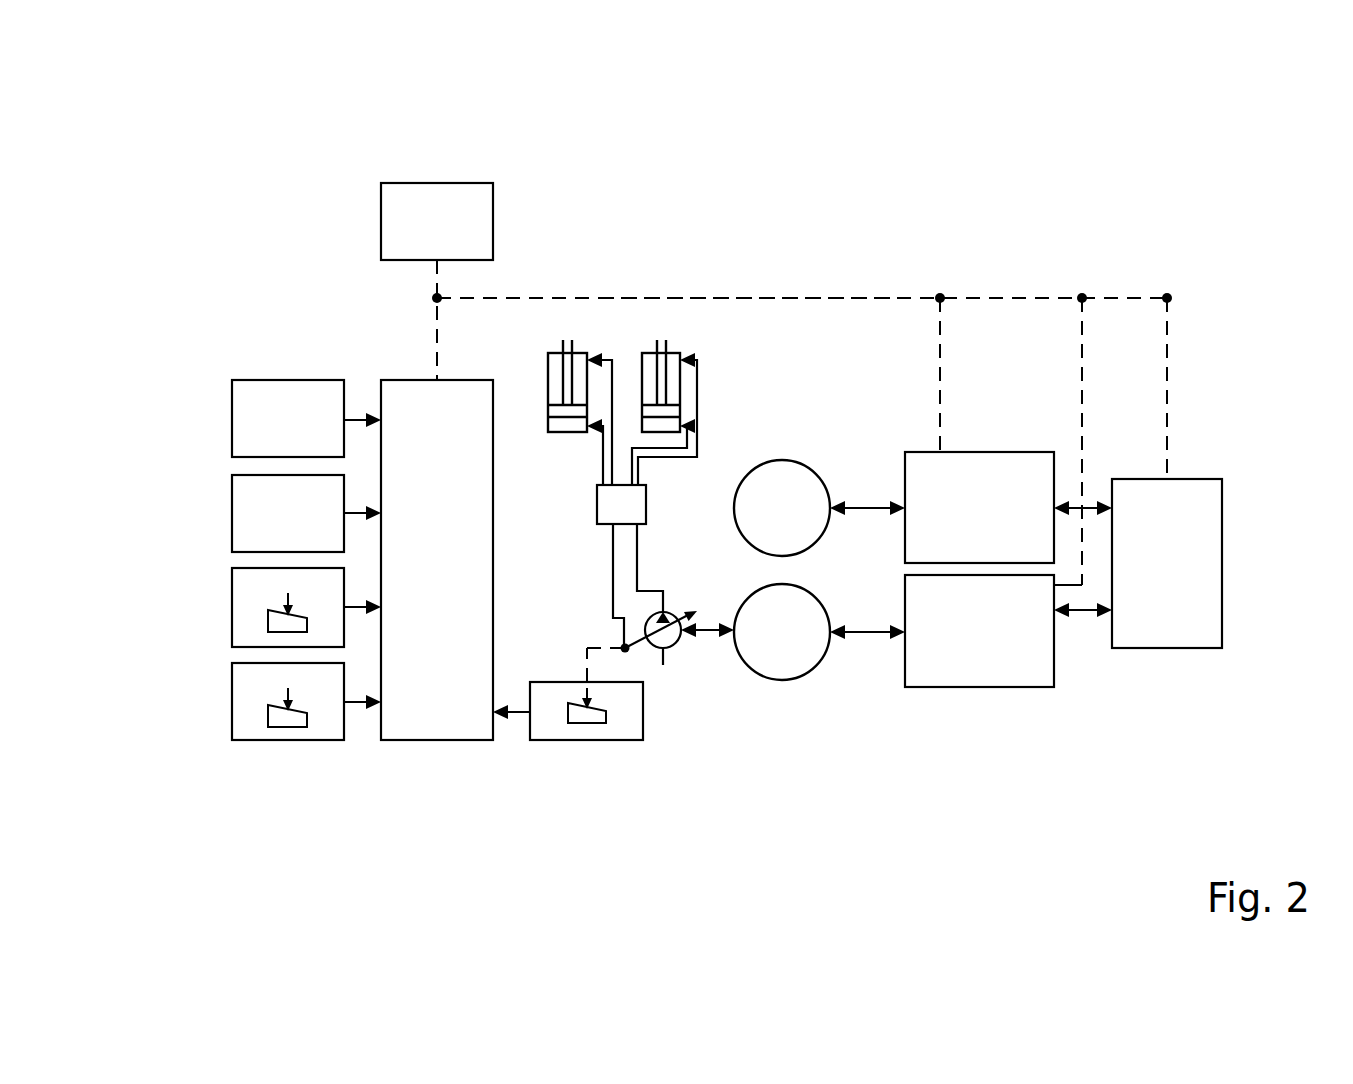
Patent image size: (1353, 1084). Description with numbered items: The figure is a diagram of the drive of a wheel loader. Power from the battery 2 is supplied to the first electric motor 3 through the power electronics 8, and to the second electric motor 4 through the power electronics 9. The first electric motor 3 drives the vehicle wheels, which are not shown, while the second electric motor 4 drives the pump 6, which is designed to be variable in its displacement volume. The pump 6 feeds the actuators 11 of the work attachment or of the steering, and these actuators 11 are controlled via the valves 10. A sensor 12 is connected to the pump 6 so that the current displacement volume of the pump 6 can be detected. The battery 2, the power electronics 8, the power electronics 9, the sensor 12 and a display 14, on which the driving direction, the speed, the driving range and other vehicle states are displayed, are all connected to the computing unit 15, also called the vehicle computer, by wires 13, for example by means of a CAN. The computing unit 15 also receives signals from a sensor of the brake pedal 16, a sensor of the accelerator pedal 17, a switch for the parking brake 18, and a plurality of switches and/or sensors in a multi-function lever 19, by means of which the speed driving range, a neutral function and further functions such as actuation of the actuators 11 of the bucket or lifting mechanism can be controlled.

The battery 2 is at (1167, 648).
The first electric motor 3 is at (784, 458).
The second electric motor 4 is at (782, 680).
The pump 6 is at (670, 637).
The power electronics 8 is at (980, 452).
The power electronics 9 is at (980, 687).
The valves 10 is at (623, 503).
The actuators 11 is at (556, 382).
The sensor 12 is at (587, 741).
The wires 13 is at (910, 298).
The display 14 is at (462, 183).
The computing unit 15 is at (438, 741).
The brake pedal 16 is at (230, 703).
The accelerator pedal 17 is at (230, 608).
The switch for the parking brake 18 is at (230, 515).
The multi-function lever 19 is at (230, 420).